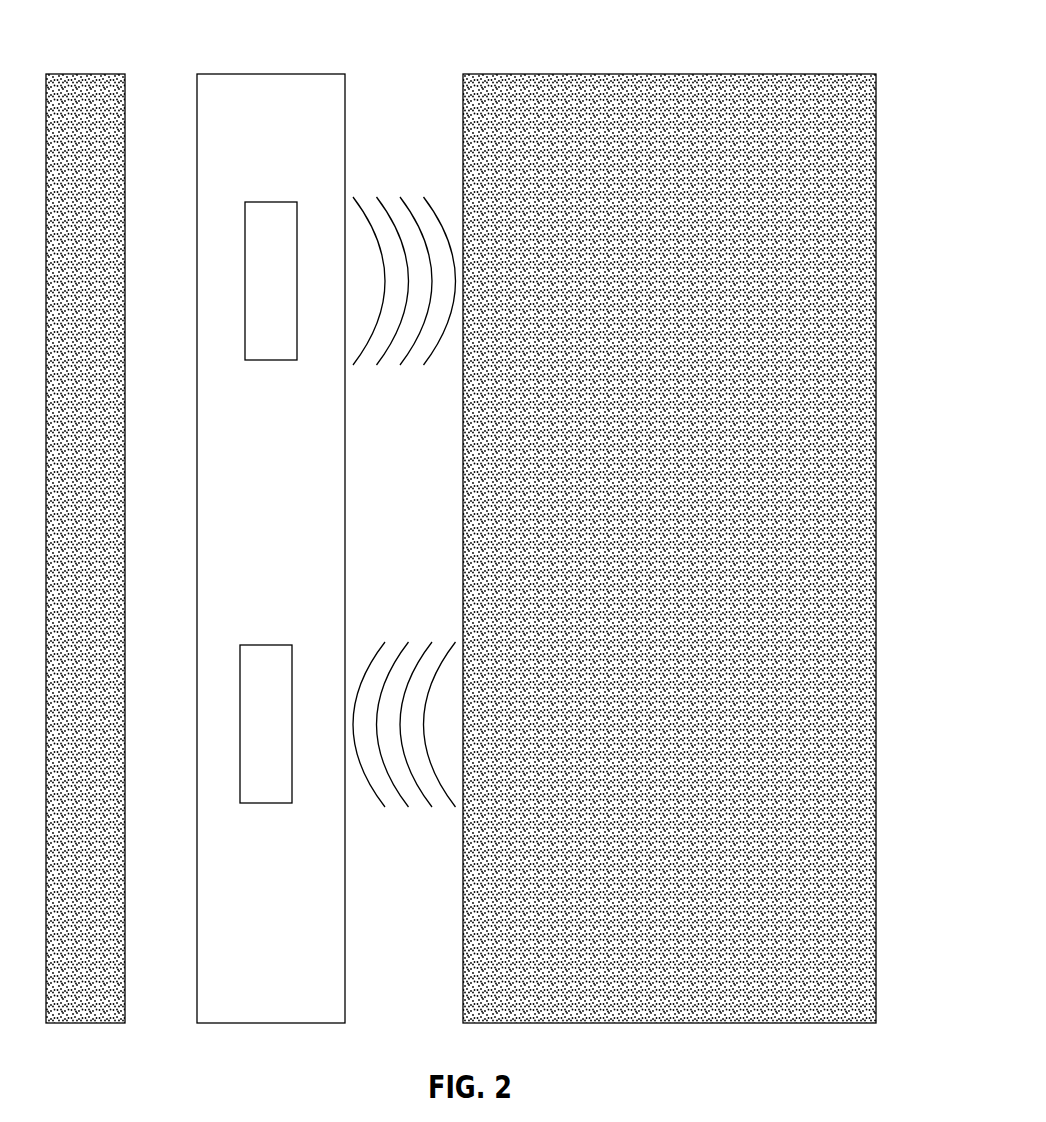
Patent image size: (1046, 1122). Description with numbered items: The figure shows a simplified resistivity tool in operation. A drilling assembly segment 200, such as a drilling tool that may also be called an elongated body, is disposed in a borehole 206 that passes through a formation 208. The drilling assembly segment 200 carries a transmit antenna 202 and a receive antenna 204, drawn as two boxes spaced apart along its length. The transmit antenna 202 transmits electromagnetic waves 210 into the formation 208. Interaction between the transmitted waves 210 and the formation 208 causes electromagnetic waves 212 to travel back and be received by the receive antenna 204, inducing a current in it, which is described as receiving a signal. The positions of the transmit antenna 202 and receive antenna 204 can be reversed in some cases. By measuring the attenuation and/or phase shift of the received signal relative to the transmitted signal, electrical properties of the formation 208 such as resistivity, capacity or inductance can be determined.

The drilling assembly segment 200 is at (270, 74).
The transmit antenna 202 is at (268, 202).
The receive antenna 204 is at (265, 803).
The borehole 206 is at (155, 74).
The formation 208 is at (865, 255).
The electromagnetic waves 210 is at (399, 408).
The electromagnetic waves 212 is at (405, 833).